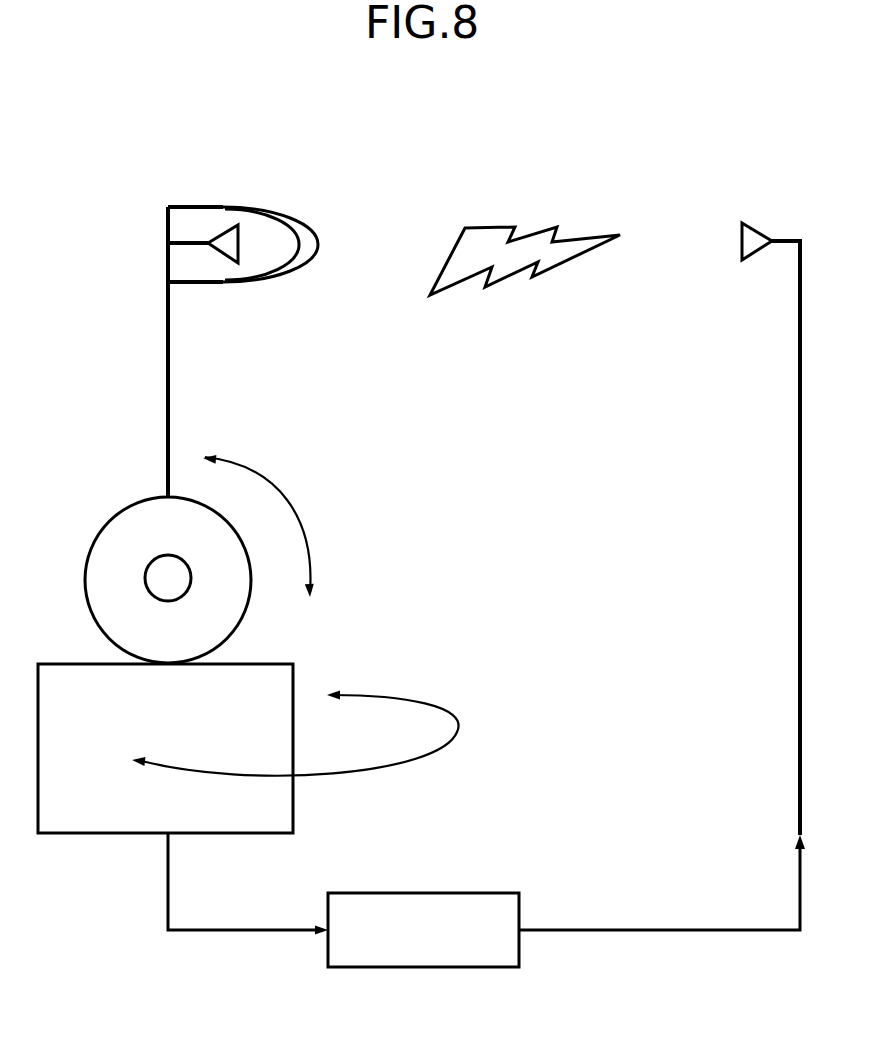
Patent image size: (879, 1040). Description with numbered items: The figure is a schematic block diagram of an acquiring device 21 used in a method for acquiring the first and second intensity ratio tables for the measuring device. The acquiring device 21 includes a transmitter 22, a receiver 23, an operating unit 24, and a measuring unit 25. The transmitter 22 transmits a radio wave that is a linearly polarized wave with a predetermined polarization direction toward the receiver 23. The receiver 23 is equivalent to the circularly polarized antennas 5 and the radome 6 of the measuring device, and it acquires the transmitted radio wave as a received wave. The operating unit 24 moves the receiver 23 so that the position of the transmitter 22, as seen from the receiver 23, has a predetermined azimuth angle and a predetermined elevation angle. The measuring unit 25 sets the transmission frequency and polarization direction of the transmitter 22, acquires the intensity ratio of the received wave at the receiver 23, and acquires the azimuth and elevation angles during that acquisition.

The circularly polarized antenna 5 is at (218, 234).
The radome 6 is at (302, 218).
The acquiring device 21 is at (522, 150).
The transmitter 22 is at (758, 232).
The receiver 23 is at (250, 152).
The operating unit 24 is at (388, 568).
The measuring unit 25 is at (474, 893).